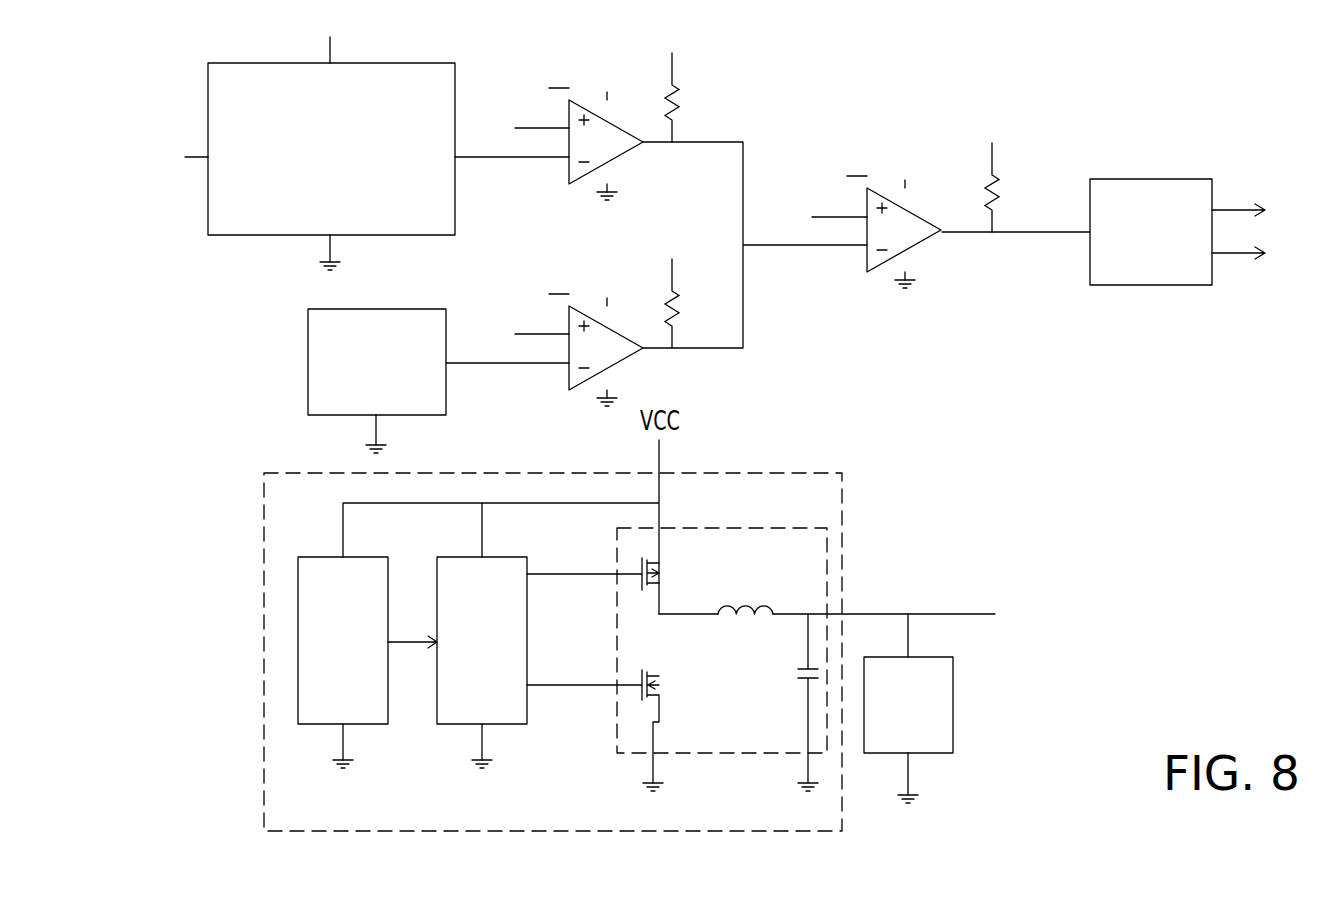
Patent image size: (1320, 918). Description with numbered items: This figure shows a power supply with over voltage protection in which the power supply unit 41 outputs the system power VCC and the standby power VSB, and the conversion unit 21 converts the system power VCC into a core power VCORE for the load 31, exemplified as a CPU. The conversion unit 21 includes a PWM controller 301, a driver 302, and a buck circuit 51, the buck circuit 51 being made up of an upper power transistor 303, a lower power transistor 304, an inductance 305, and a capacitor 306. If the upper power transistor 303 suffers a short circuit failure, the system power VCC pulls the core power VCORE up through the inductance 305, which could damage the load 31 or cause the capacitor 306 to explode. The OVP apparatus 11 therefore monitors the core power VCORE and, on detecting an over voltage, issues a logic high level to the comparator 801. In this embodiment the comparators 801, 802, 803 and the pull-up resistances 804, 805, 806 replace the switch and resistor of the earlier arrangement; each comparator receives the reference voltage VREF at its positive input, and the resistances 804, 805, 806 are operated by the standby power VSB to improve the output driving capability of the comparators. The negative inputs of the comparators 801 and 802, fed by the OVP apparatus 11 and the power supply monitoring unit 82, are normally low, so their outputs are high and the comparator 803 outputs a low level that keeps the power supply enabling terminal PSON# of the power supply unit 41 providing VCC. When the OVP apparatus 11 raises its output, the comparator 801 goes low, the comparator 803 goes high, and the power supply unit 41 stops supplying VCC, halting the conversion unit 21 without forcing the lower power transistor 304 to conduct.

The OVP apparatus 11 is at (242, 237).
The power supply monitoring unit 82 is at (308, 400).
The comparator 801 is at (569, 172).
The comparator 802 is at (569, 378).
The comparator 803 is at (867, 262).
The pull-up resistance 804 is at (680, 90).
The pull-up resistance 805 is at (686, 298).
The pull-up resistance 806 is at (1000, 180).
The power supply unit 41 is at (1135, 285).
The conversion unit 21 is at (843, 492).
The buck circuit 51 is at (722, 757).
The PWM controller 301 is at (370, 724).
The driver 302 is at (513, 724).
The upper power transistor 303 is at (661, 567).
The lower power transistor 304 is at (662, 675).
The inductance 305 is at (758, 604).
The capacitor 306 is at (795, 672).
The load 31 is at (953, 740).